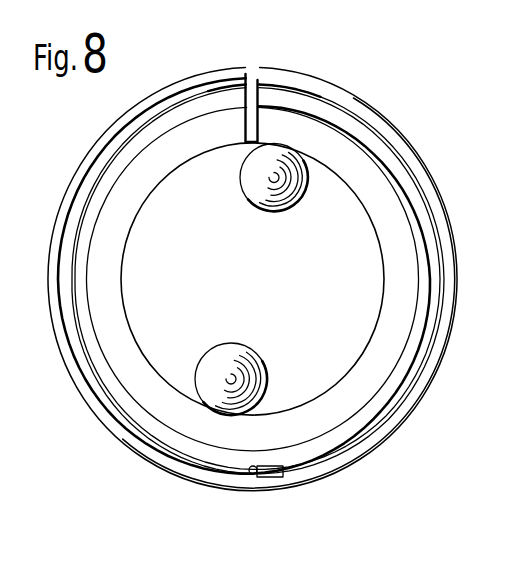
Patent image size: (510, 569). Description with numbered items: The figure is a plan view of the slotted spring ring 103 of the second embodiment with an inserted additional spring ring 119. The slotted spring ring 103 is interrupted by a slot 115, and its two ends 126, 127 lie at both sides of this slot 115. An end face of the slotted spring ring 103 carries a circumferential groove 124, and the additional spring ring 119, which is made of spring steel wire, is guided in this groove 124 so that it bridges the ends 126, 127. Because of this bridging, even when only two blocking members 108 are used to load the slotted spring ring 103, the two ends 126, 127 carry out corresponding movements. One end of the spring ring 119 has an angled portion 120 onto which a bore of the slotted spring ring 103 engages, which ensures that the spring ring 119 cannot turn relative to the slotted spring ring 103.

The slotted spring ring 103 is at (395, 447).
The blocking member 108 is at (252, 182).
The slot 115 is at (249, 73).
The spring ring 119 is at (343, 108).
The angled portion 120 is at (255, 474).
The circumferential groove 124 is at (276, 478).
The end 126 is at (288, 80).
The end 127 is at (205, 79).